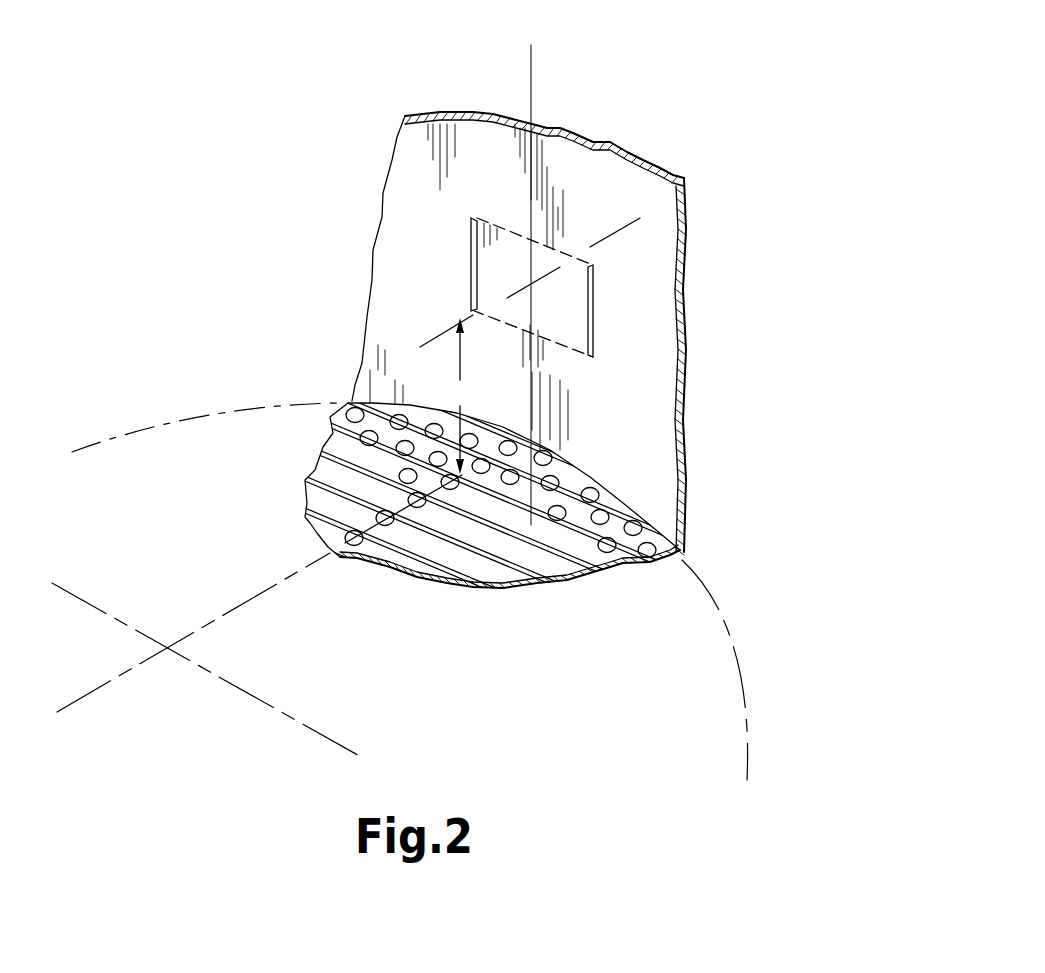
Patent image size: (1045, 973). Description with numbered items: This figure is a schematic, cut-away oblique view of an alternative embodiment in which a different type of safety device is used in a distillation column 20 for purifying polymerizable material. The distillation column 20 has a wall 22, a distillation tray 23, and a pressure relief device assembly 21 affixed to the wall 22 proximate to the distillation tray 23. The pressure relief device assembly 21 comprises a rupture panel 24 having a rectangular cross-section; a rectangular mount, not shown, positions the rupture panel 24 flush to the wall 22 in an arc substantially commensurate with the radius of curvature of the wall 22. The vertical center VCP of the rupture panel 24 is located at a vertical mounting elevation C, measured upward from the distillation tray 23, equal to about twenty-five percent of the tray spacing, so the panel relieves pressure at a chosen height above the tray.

The distillation column 20 is at (565, 105).
The pressure relief device assembly 21 is at (557, 308).
The wall 22 is at (410, 253).
The distillation tray 23 is at (453, 575).
The rupture panel 24 is at (527, 281).
The vertical center VCP is at (530, 283).
The vertical mounting elevation C is at (459, 396).